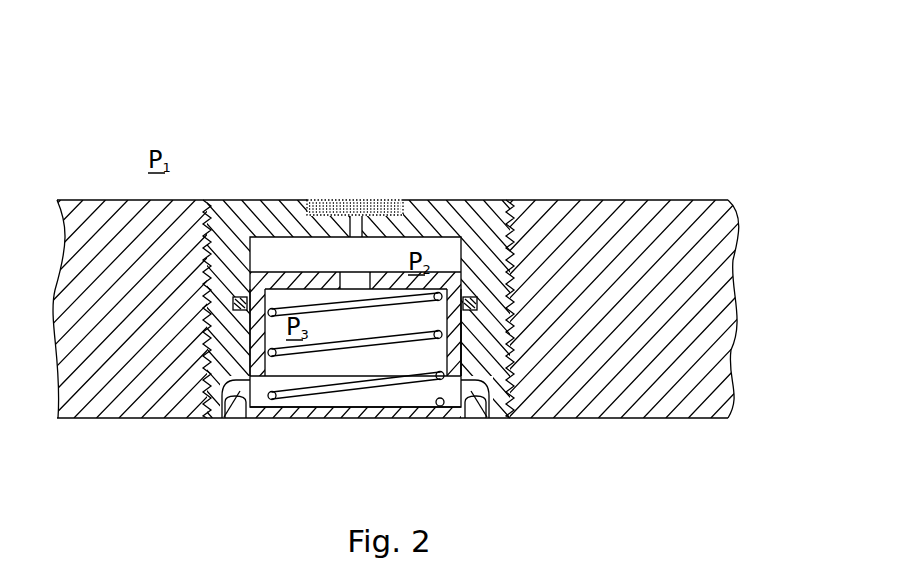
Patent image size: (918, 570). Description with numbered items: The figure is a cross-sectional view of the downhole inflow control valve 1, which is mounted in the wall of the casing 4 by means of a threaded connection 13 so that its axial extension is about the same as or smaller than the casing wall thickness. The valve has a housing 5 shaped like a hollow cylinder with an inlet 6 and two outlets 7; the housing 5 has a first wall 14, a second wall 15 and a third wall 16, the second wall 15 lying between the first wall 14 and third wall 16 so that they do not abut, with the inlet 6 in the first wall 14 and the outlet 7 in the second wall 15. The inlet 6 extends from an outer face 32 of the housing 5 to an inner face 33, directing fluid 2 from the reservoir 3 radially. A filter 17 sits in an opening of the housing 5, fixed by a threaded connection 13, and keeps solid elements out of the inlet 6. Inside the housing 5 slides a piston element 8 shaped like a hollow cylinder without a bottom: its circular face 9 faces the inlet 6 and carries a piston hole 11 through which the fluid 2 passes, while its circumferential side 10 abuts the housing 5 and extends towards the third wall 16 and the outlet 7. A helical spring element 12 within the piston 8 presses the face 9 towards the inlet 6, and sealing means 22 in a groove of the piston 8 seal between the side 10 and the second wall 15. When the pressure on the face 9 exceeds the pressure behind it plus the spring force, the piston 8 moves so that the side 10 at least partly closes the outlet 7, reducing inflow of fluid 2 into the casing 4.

The downhole inflow control valve 1 is at (226, 132).
The fluid 2 is at (430, 174).
The reservoir 3 is at (507, 160).
The casing 4 is at (620, 240).
The housing 5 is at (513, 240).
The inlet 6 is at (349, 230).
The outlet 7 is at (234, 392).
The piston element 8 is at (465, 323).
The face 9 is at (295, 273).
The side 10 is at (228, 322).
The piston hole 11 is at (360, 280).
The spring element 12 is at (408, 378).
The threaded connection 13 is at (205, 272).
The first wall 14 is at (455, 232).
The second wall 15 is at (497, 313).
The third wall 16 is at (437, 407).
The filter 17 is at (366, 212).
The sealing means 22 is at (478, 302).
The outer face 32 is at (448, 222).
The inner face 33 is at (296, 215).